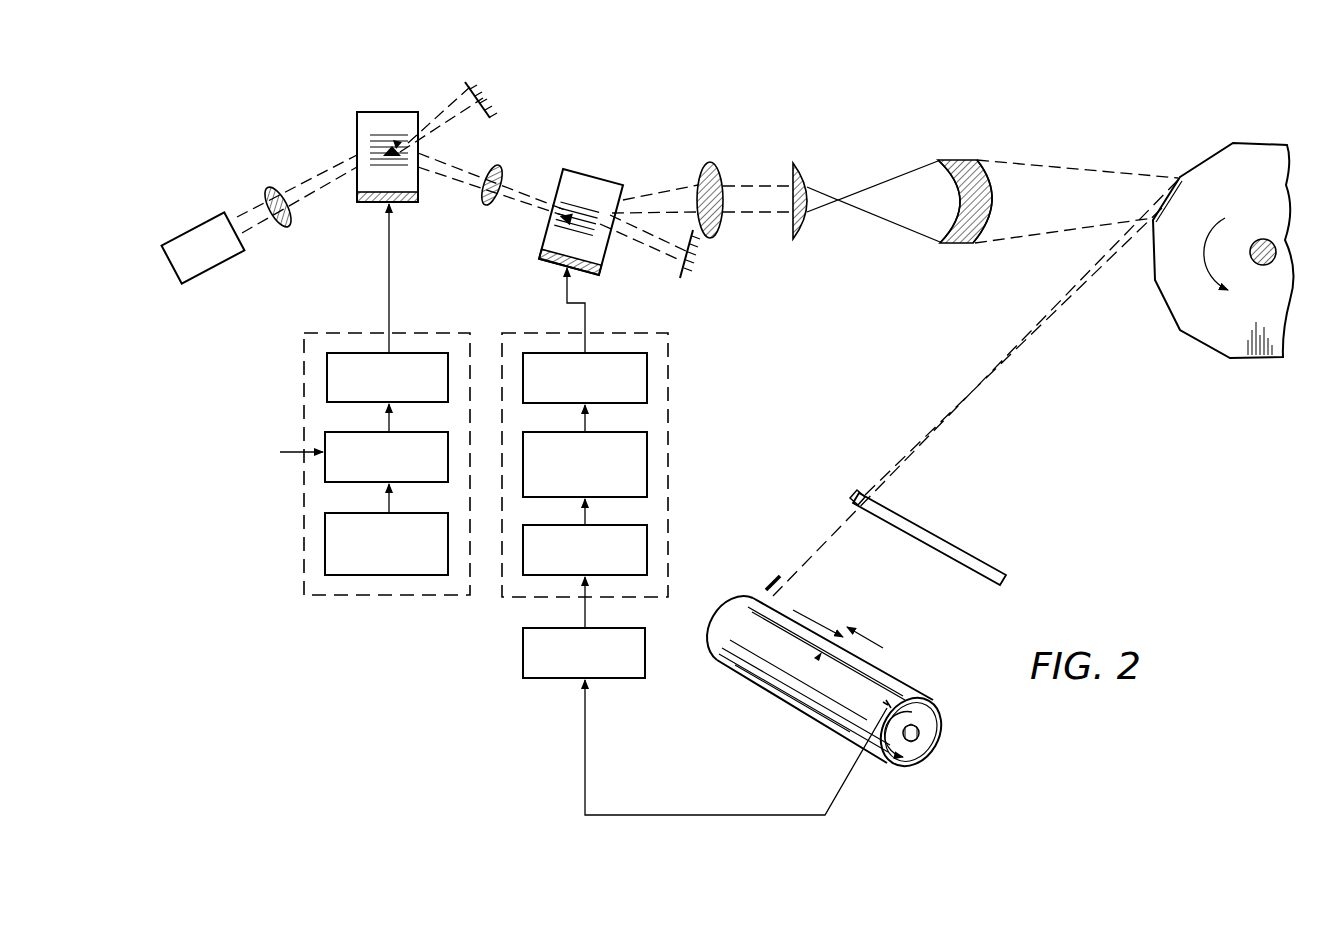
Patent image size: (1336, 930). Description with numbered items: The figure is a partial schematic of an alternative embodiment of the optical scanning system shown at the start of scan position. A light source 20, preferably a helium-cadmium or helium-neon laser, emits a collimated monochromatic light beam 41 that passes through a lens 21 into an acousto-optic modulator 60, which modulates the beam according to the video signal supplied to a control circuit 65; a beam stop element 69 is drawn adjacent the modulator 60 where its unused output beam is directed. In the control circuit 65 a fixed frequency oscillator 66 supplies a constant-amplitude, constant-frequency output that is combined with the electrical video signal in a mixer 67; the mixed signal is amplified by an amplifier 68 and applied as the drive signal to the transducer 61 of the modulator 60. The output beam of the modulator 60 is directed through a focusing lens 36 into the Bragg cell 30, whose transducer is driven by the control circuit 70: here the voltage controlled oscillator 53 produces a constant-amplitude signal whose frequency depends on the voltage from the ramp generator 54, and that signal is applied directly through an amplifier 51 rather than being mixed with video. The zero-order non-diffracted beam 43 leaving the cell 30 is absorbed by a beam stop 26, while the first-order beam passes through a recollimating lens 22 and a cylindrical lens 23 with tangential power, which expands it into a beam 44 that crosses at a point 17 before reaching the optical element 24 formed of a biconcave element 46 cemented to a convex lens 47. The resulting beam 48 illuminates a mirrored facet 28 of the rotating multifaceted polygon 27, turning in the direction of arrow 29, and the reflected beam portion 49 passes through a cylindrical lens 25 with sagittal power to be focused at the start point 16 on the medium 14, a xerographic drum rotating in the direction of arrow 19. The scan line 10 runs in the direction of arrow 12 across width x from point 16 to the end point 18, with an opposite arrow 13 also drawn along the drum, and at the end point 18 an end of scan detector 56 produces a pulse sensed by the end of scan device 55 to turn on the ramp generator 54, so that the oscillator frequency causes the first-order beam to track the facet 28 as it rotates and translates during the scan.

The scan line 10 is at (784, 689).
The arrow 12 is at (815, 606).
The return scan direction 13 is at (875, 645).
The medium 14 is at (796, 685).
The start of scan point 16 is at (768, 590).
The beam focus point 17 is at (838, 196).
The end of scan point 18 is at (920, 685).
The arrow 19 is at (912, 712).
The light source 20 is at (243, 252).
The lens 21 is at (276, 185).
The recollimating lens 22 is at (712, 163).
The cylindrical lens 23 is at (798, 236).
The optical element 24 is at (962, 178).
The cylindrical lens 25 is at (985, 565).
The beam stop 26 is at (697, 262).
The rotating multifaceted polygon 27 is at (1209, 250).
The facet 28 is at (1172, 192).
The arrow 29 is at (1212, 255).
The acousto-optic modulator 30 is at (581, 202).
The focusing lens 36 is at (486, 203).
The light beam 41 is at (240, 215).
The zero-order non-diffracted beam 43 is at (640, 247).
The beam 44 is at (903, 228).
The biconcave element 46 is at (960, 162).
The convex lens 47 is at (993, 200).
The beam 48 is at (1068, 165).
The beam portion 49 is at (960, 398).
The amplifier 51 is at (605, 405).
The voltage controlled oscillator 53 is at (617, 499).
The ramp generator 54 is at (647, 560).
The end of scan device 55 is at (523, 640).
The end of scan detector 56 is at (880, 705).
The acousto-optic modulator 60 is at (384, 157).
The transducer 61 is at (362, 203).
The control circuit 65 is at (336, 399).
The fixed frequency oscillator 66 is at (410, 513).
The mixer 67 is at (346, 432).
The amplifier 68 is at (327, 372).
The zero-order beam stop mirror 69 is at (487, 100).
The control circuit 70 is at (611, 432).